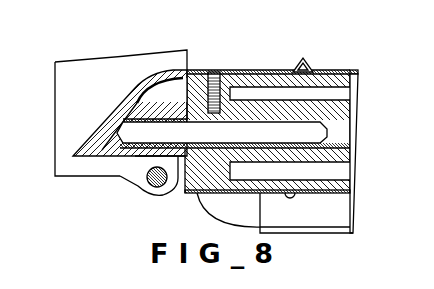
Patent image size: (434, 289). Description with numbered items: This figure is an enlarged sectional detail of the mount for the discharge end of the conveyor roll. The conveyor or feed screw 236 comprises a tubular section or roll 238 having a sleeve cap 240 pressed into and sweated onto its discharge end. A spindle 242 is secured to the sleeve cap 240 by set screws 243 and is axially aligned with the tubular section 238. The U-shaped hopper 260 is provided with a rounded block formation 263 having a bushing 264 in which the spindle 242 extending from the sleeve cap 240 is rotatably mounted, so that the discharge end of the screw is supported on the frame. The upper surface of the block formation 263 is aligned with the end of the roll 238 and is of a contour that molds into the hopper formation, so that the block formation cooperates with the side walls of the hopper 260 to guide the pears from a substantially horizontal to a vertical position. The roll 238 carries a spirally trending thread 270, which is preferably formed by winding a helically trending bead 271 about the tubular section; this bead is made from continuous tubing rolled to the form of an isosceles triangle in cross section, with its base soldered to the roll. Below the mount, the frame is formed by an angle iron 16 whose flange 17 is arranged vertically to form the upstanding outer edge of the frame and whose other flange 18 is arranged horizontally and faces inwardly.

The U-shaped hopper 260 is at (87, 77).
The rounded block formation 263 is at (137, 86).
The bushing 264 is at (184, 110).
The spindle 242 is at (222, 132).
The set screw 243 is at (220, 90).
The sleeve cap 240 is at (333, 87).
The spirally trending thread 270 is at (313, 68).
The helically trending bead 271 is at (305, 58).
The feed screw 236 is at (357, 73).
The tubular section or roll 238 is at (361, 85).
The flange 17 is at (352, 198).
The angle iron 16 is at (347, 200).
The flange 18 is at (330, 231).